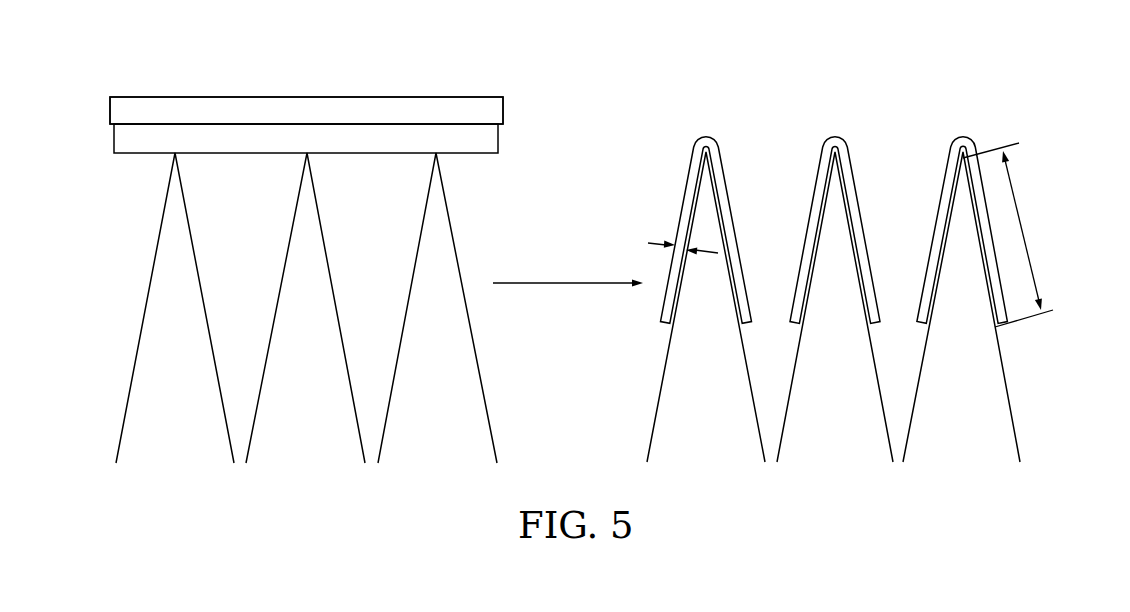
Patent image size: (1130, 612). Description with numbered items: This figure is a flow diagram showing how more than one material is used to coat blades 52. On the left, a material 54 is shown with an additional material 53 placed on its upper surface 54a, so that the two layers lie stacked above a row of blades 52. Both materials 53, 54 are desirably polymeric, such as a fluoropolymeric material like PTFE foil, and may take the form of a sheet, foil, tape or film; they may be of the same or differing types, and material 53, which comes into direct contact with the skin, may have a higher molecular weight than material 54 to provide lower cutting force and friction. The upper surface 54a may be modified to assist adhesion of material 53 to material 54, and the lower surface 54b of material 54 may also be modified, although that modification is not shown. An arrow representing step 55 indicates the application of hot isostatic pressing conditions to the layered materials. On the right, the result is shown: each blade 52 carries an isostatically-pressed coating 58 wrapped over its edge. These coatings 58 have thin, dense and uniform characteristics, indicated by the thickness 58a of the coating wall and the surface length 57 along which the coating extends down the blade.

The blades 52 is at (214, 410).
The additional material 53 is at (316, 107).
The material 54 is at (283, 159).
The upper surface 54a is at (104, 131).
The lower surface 54b is at (109, 161).
The step 55 is at (568, 270).
The surface length 57 is at (1033, 234).
The isostatically-pressed coatings 58 is at (683, 160).
The thickness 58a is at (680, 243).